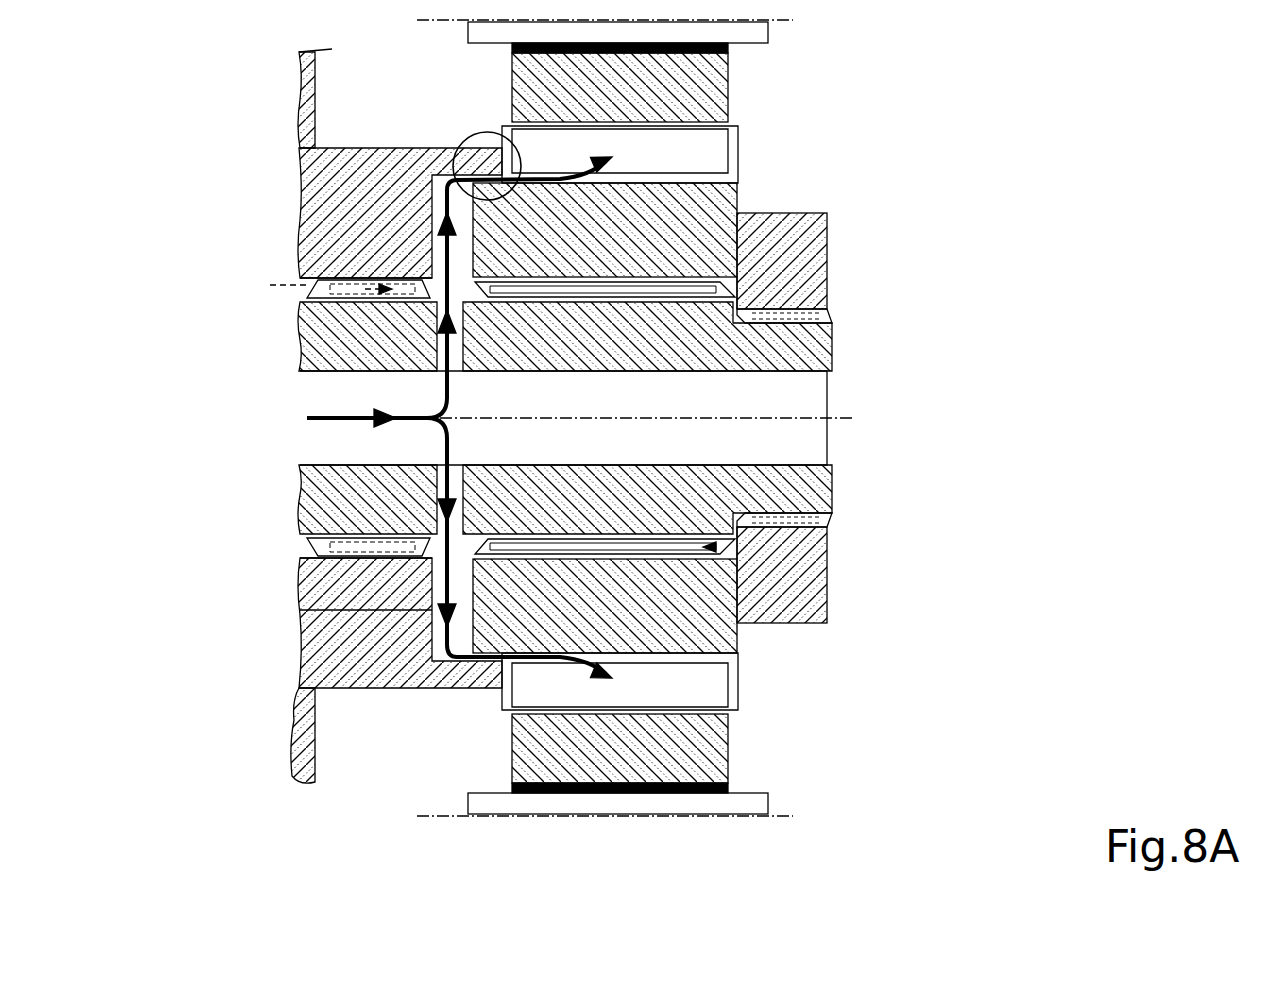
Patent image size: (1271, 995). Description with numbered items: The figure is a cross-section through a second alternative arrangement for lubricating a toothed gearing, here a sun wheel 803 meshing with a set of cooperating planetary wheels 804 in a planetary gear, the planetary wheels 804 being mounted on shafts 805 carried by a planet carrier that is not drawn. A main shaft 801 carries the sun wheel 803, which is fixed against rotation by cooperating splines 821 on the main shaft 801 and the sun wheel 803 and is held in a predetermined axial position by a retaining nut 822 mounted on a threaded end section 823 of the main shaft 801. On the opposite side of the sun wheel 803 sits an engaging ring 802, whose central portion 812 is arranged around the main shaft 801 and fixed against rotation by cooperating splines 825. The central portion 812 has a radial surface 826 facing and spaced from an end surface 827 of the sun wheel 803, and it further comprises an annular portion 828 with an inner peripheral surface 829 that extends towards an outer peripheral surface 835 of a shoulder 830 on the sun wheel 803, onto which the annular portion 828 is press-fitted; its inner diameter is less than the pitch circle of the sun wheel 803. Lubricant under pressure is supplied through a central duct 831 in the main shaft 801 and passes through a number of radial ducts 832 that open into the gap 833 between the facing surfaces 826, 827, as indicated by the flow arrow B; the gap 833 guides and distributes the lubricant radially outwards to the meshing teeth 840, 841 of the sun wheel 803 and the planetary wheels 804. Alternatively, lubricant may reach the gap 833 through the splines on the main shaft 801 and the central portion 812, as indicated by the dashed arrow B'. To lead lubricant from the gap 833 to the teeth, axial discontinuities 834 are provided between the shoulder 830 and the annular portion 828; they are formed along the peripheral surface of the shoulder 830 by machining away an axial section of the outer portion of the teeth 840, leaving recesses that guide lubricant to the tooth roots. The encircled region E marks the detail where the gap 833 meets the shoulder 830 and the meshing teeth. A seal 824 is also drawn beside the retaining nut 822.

The main shaft 801 is at (282, 332).
The engaging ring 802 is at (300, 83).
The sun wheel 803 is at (738, 194).
The planetary wheels 804 is at (730, 82).
The shafts 805 is at (755, 33).
The central portion 812 is at (328, 190).
The cooperating splines 821 is at (712, 547).
The retaining nut 822 is at (826, 257).
The threaded end section 823 is at (820, 343).
The seal 824 is at (830, 317).
The cooperating splines 825 is at (305, 548).
The radial surface 826 is at (300, 611).
The end surface 827 is at (428, 612).
The annular portion 828 is at (430, 688).
The inner peripheral surface 829 is at (398, 690).
The shoulder 830 is at (498, 172).
The central duct 831 is at (326, 440).
The radial ducts 832 is at (437, 330).
The gap 833 is at (437, 247).
The axial discontinuities 834 is at (436, 688).
The outer peripheral surface 835 is at (474, 670).
The teeth 840 is at (740, 157).
The teeth 841 is at (710, 142).
The lubricant flow B is at (425, 417).
The lubricant flow B' is at (316, 265).
The detail region E is at (461, 134).